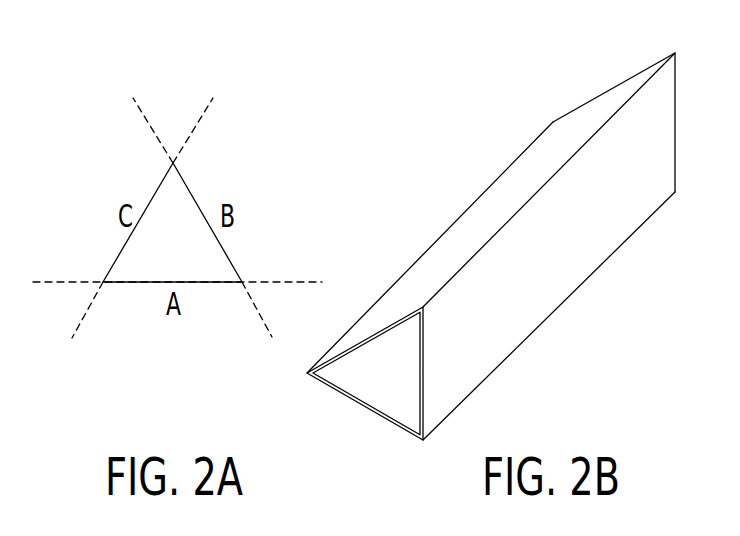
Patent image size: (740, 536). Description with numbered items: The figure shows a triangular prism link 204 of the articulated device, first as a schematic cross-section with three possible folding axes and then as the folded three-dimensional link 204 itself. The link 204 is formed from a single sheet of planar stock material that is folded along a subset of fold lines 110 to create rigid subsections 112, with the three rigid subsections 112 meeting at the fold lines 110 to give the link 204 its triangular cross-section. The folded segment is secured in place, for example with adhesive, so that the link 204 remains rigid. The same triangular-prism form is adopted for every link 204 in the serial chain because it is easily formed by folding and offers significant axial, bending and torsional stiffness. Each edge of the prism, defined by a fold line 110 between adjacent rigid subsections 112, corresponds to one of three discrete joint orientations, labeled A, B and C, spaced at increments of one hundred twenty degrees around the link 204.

In FIG. 2A, the fold lines 110 is at (173, 156).
In FIG. 2B, the fold lines 110 is at (635, 95).
In FIG. 2A, the rigid subsections 112 is at (192, 197).
In FIG. 2B, the rigid subsections 112 is at (488, 203).
In FIG. 2B, the link 204 is at (539, 113).